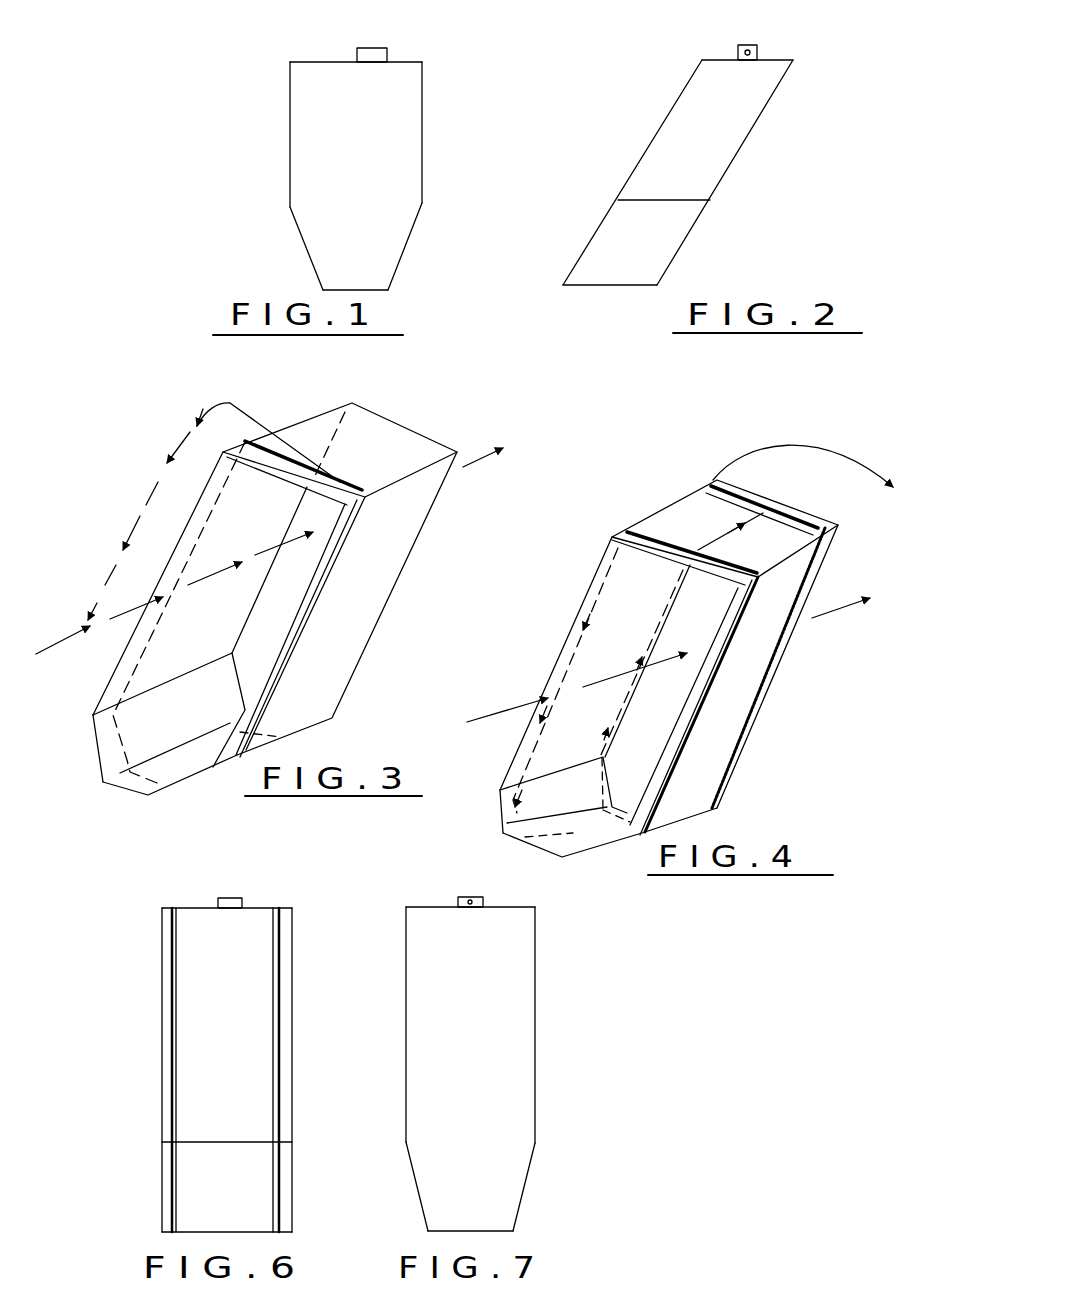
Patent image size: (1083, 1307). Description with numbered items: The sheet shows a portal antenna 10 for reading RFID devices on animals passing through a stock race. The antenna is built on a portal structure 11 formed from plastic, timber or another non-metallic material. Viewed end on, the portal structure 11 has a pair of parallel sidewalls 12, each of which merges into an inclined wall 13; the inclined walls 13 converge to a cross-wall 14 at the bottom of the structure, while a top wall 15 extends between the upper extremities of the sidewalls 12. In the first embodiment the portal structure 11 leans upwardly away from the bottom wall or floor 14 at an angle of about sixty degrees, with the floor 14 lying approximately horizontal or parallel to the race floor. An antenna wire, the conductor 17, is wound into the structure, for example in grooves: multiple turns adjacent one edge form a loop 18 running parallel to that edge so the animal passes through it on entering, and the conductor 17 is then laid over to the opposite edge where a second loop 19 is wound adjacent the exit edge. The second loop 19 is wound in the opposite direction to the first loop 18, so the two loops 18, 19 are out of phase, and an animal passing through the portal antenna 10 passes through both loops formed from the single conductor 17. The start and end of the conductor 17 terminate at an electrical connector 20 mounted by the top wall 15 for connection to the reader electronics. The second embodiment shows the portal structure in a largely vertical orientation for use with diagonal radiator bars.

In FIG. 1, the portal antenna 10 is at (344, 145).
In FIG. 2, the portal antenna 10 is at (687, 175).
In FIG. 1, the portal structure 11 is at (425, 113).
In FIG. 2, the portal structure 11 is at (660, 120).
In FIG. 3, the portal structure 11 is at (358, 400).
In FIG. 1, the sidewalls 12 is at (288, 145).
In FIG. 2, the sidewalls 12 is at (710, 152).
In FIG. 3, the sidewalls 12 is at (388, 589).
In FIG. 4, the sidewalls 12 is at (787, 580).
In FIG. 6, the sidewalls 12 is at (210, 1073).
In FIG. 7, the sidewalls 12 is at (406, 1023).
In FIG. 1, the inclined walls 13 is at (303, 243).
In FIG. 2, the inclined walls 13 is at (673, 228).
In FIG. 3, the inclined walls 13 is at (108, 752).
In FIG. 4, the inclined walls 13 is at (562, 787).
In FIG. 6, the inclined walls 13 is at (208, 1163).
In FIG. 7, the inclined walls 13 is at (410, 1163).
In FIG. 1, the cross-wall 14 is at (367, 290).
In FIG. 2, the cross-wall 14 is at (587, 283).
In FIG. 3, the cross-wall 14 is at (165, 772).
In FIG. 4, the cross-wall 14 is at (523, 822).
In FIG. 7, the cross-wall 14 is at (483, 1230).
In FIG. 1, the top wall 15 is at (405, 62).
In FIG. 2, the top wall 15 is at (777, 60).
In FIG. 3, the top wall 15 is at (400, 445).
In FIG. 4, the top wall 15 is at (780, 537).
In FIG. 6, the top wall 15 is at (193, 907).
In FIG. 7, the top wall 15 is at (442, 905).
In FIG. 3, the conductor 17 is at (250, 413).
In FIG. 4, the conductor 17 is at (817, 437).
In FIG. 3, the loop 18 is at (316, 628).
In FIG. 4, the loop 18 is at (692, 737).
In FIG. 6, the loop 18 is at (170, 1030).
In FIG. 4, the second loop 19 is at (760, 700).
In FIG. 6, the second loop 19 is at (285, 1035).
In FIG. 1, the electrical connector 20 is at (370, 50).
In FIG. 2, the electrical connector 20 is at (737, 52).
In FIG. 6, the electrical connector 20 is at (240, 895).
In FIG. 7, the electrical connector 20 is at (497, 887).